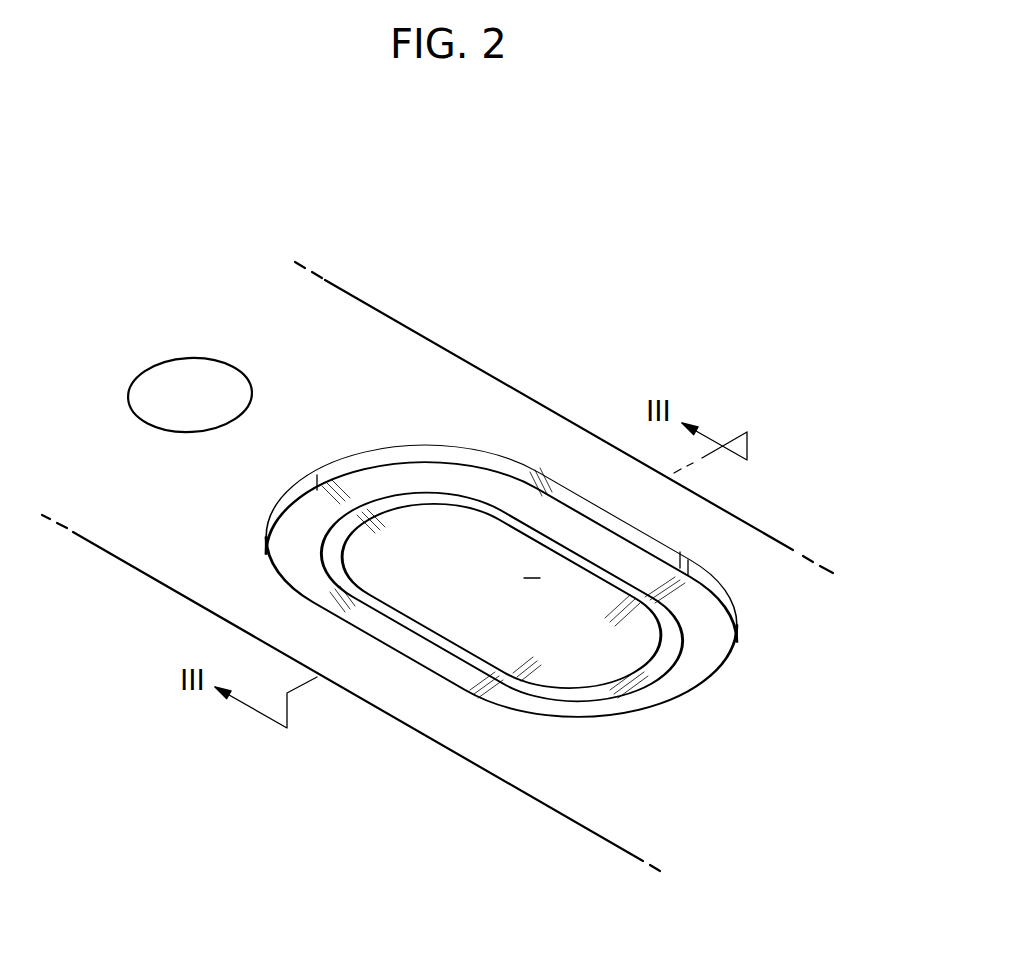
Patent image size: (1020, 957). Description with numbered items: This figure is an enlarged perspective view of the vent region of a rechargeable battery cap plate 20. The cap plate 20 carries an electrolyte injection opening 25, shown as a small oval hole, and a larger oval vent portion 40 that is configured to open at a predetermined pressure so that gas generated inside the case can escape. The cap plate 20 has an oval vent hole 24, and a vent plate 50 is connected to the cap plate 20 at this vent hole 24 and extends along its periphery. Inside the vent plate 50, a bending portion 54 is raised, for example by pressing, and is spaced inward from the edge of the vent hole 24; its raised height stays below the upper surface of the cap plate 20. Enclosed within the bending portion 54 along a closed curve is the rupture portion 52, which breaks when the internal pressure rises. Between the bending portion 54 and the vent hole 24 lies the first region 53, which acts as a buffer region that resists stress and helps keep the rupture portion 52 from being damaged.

The cap plate 20 is at (407, 345).
The vent hole 24 is at (532, 577).
The electrolyte injection opening 25 is at (230, 380).
The vent portion 40 is at (410, 665).
The vent plate 50 is at (613, 557).
The rupture portion 52 is at (487, 633).
The first region 53 is at (485, 482).
The bending portion 54 is at (422, 497).